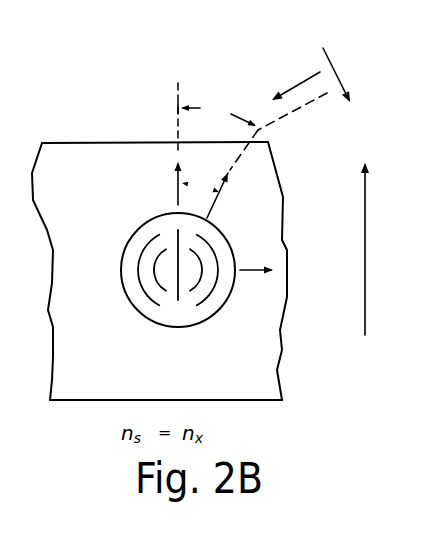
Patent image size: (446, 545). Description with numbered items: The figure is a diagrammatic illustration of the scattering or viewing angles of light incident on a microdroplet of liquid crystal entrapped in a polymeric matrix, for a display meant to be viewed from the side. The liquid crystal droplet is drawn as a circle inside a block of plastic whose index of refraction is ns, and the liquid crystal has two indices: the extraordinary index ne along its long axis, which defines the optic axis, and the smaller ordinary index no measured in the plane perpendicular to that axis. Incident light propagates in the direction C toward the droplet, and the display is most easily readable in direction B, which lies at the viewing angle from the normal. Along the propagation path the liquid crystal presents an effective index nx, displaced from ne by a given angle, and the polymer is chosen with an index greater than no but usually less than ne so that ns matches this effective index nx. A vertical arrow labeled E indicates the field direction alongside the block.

The index of refraction of the polymeric matrix ns is at (159, 271).
The extraordinary index of refraction ne is at (163, 183).
The effective index of refraction nx is at (267, 155).
The ordinary index of refraction no is at (256, 285).
The viewing direction B is at (296, 81).
The direction of propagation of incident light C is at (337, 75).
The electric field vector E is at (378, 232).